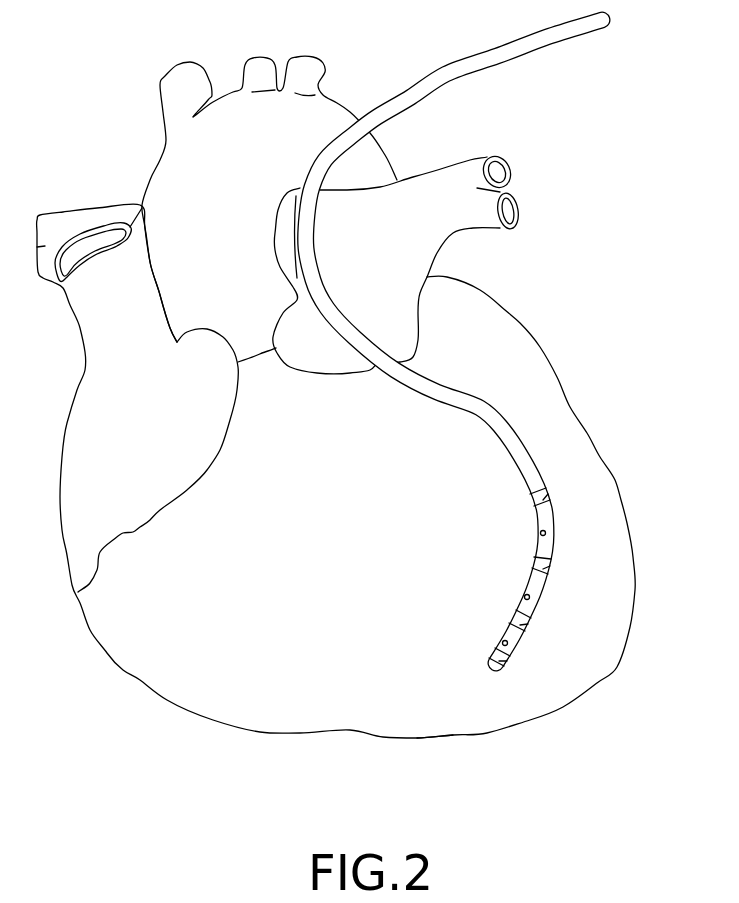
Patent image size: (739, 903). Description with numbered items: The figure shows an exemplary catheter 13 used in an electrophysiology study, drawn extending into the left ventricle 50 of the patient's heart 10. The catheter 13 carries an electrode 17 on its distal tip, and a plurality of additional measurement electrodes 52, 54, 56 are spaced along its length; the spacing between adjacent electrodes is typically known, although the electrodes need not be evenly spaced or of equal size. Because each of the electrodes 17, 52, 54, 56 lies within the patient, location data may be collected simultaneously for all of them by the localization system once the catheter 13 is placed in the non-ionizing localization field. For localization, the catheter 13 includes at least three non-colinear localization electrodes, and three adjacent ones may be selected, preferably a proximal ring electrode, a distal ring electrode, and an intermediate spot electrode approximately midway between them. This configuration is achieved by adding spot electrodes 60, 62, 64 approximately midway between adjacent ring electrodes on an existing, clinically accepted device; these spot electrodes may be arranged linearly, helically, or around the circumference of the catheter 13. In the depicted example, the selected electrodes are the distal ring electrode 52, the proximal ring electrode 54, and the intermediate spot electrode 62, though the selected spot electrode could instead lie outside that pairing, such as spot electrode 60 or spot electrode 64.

The heart 10 is at (500, 307).
The catheter 13 is at (500, 53).
The electrode 17 is at (493, 670).
The left ventricle 50 is at (488, 735).
The distal ring electrode 52 is at (520, 622).
The proximal ring electrode 54 is at (540, 568).
The measurement electrode 56 is at (541, 497).
The spot electrode 60 is at (506, 645).
The intermediate spot electrode 62 is at (528, 597).
The spot electrode 64 is at (545, 533).